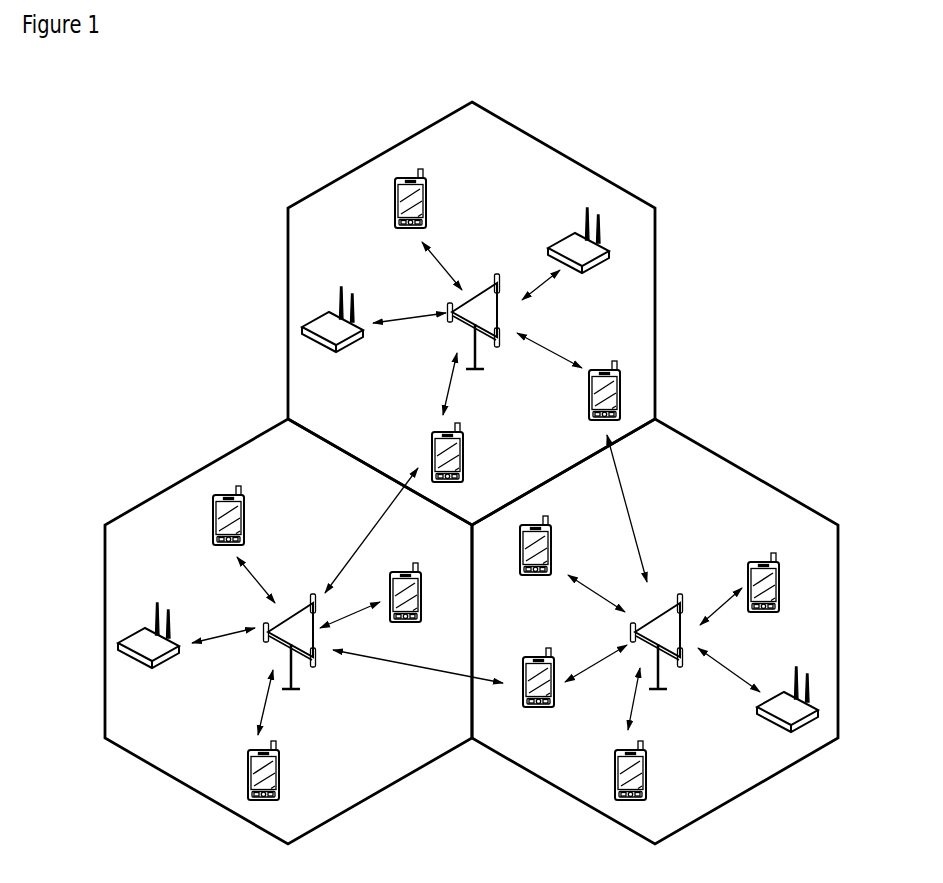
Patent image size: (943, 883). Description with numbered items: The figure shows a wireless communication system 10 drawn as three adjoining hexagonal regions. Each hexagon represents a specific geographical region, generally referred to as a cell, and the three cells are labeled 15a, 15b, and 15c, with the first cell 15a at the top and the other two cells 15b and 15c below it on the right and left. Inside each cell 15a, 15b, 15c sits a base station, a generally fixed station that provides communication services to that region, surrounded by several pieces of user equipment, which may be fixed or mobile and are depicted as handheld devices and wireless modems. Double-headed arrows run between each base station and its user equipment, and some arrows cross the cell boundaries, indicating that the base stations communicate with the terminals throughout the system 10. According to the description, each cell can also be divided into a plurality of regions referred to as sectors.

The wireless communication system 10 is at (736, 212).
The cell 15a is at (657, 303).
The cell 15b is at (770, 485).
The cell 15c is at (172, 486).